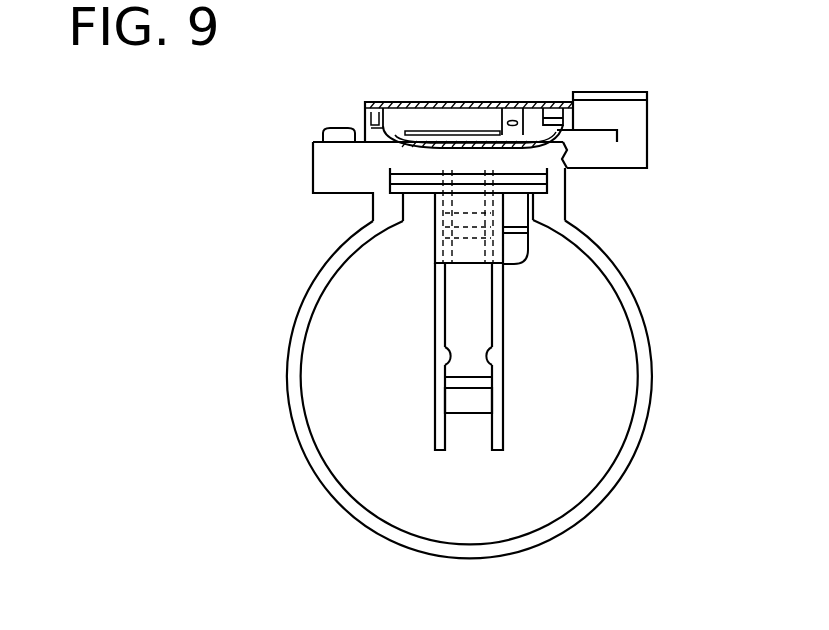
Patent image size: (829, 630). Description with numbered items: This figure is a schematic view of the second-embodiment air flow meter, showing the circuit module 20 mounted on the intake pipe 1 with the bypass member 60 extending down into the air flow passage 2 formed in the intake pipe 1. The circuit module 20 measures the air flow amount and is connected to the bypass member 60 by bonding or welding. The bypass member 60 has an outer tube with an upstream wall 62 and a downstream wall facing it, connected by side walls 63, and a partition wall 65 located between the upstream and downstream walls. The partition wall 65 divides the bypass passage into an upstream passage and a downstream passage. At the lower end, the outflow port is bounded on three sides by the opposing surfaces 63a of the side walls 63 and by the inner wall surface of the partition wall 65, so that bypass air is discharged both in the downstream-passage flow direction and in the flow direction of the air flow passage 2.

The intake pipe 1 is at (624, 290).
The air flow passage 2 is at (610, 350).
The circuit module 20 is at (586, 85).
The bypass member 60 is at (476, 390).
The upstream wall 62 is at (438, 250).
The side walls 63 is at (435, 335).
The opposing surfaces 63a is at (446, 366).
The partition wall 65 is at (472, 363).